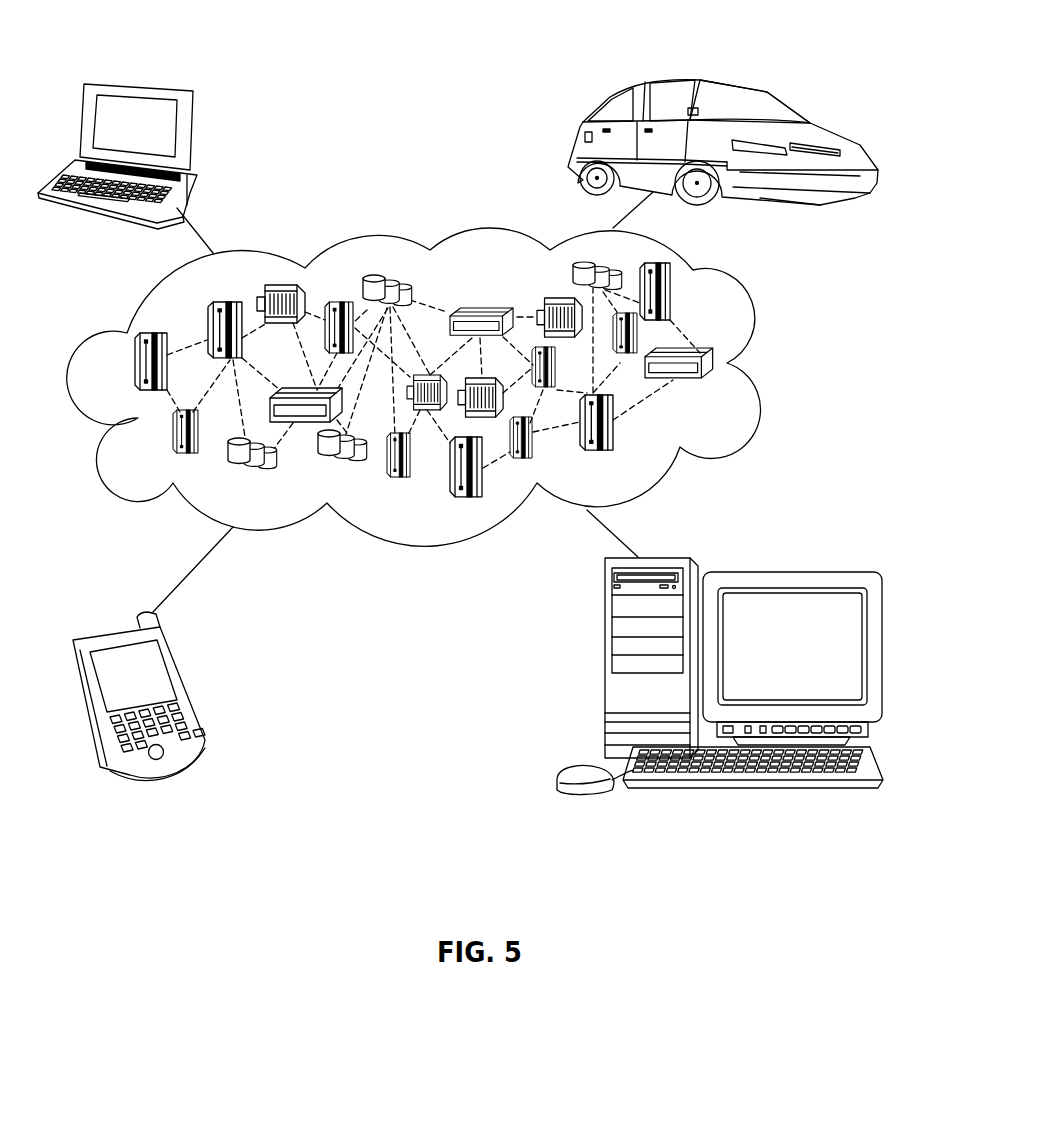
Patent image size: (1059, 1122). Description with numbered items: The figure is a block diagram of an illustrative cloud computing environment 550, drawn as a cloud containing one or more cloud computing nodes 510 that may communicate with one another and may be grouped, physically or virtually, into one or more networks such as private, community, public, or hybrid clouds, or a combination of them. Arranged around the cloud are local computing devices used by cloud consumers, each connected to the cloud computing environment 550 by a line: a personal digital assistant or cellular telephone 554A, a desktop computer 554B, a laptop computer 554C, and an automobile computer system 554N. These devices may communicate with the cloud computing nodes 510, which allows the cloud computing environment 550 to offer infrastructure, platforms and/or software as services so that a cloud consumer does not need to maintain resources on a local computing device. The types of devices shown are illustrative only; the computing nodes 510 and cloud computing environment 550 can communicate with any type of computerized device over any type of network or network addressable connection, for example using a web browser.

The cloud computing nodes 510 is at (752, 389).
The cloud computing environment 550 is at (757, 327).
The personal digital assistant (PDA) or cellular telephone 554A is at (187, 687).
The desktop computer 554B is at (605, 665).
The laptop computer 554C is at (193, 130).
The automobile computer system 554N is at (578, 138).